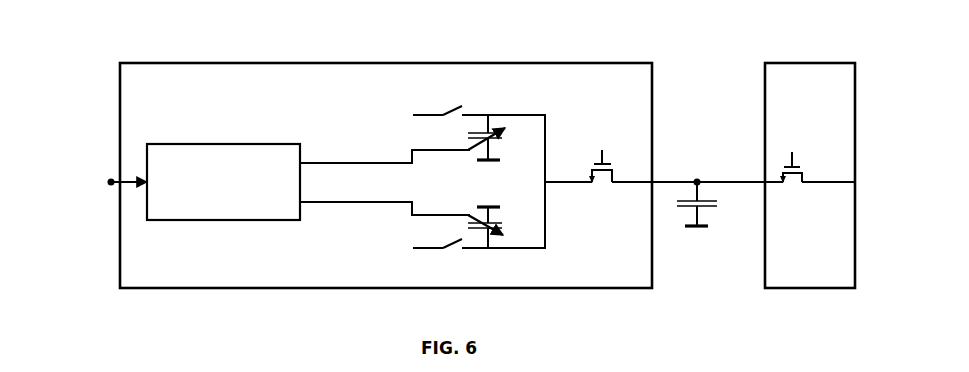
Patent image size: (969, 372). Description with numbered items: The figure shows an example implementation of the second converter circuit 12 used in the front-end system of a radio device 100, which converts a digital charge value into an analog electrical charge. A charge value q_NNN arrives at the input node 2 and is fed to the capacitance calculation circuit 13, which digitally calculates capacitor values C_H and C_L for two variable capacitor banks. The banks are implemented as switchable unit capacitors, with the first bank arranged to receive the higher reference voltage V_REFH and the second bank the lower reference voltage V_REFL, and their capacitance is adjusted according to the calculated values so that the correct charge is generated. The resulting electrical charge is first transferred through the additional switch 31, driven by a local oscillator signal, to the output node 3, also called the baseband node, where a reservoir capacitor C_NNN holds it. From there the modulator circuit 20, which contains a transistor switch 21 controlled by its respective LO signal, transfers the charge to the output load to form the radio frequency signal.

The radio device 100 is at (86, 74).
The input node 2 is at (111, 182).
The second converter circuit 12 is at (442, 175).
The capacitance calculation circuit 13 is at (223, 182).
The output node 3 is at (697, 182).
The additional switch 31 is at (602, 188).
The modulator circuit 20 is at (792, 175).
The switch 21 is at (792, 188).